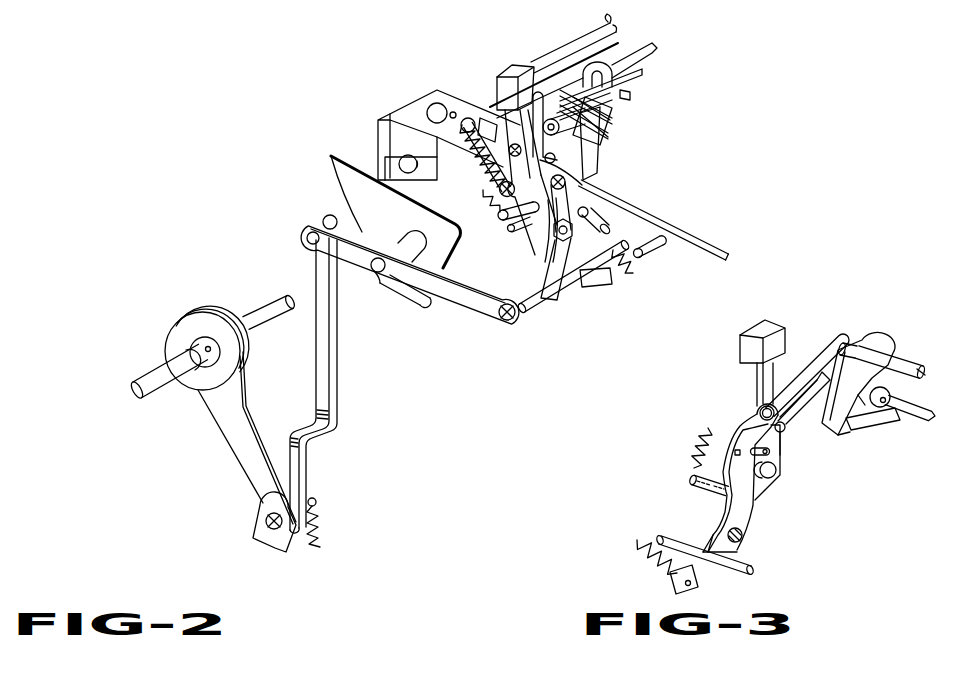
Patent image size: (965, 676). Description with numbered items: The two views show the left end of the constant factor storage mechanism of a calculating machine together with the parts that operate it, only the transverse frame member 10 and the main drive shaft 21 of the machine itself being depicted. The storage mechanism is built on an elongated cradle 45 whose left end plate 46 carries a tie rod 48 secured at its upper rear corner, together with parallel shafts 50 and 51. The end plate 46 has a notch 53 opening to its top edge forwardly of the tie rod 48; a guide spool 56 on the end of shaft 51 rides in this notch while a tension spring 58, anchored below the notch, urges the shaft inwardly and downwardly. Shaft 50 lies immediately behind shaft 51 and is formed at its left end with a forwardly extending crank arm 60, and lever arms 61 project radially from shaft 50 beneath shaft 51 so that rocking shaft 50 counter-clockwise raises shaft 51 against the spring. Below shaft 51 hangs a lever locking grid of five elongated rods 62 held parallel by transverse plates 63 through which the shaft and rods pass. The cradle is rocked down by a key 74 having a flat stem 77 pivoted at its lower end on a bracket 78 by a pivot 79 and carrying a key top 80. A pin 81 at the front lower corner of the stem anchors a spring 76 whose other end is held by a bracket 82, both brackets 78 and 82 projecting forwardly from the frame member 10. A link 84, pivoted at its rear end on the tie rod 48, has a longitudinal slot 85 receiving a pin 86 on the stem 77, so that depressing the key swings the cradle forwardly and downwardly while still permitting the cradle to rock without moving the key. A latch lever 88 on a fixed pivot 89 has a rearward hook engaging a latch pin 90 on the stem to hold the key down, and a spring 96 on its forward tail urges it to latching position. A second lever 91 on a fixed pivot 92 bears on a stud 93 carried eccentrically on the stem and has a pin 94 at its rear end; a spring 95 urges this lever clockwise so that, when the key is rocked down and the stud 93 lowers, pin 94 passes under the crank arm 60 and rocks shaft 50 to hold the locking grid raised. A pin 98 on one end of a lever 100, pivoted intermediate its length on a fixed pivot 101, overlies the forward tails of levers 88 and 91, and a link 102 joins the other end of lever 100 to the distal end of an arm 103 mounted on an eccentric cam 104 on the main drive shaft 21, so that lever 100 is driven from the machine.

In FIG. 2, the transverse frame member 10 is at (588, 42).
In FIG. 2, the main drive shaft 21 is at (175, 384).
In FIG. 2, the cradle 45 is at (541, 88).
In FIG. 2, the end plate 46 is at (597, 172).
In FIG. 3, the end plate 46 is at (895, 352).
In FIG. 2, the tie rod 48 is at (617, 26).
In FIG. 3, the tie rod 48 is at (912, 365).
In FIG. 2, the shaft 50 is at (655, 46).
In FIG. 3, the shaft 50 is at (930, 410).
In FIG. 2, the shaft 51 is at (645, 77).
In FIG. 2, the notch 53 is at (590, 157).
In FIG. 3, the notch 53 is at (838, 428).
In FIG. 2, the guide spool 56 is at (553, 118).
In FIG. 2, the tension spring 58 is at (605, 185).
In FIG. 2, the crank arm 60 is at (615, 165).
In FIG. 3, the crank arm 60 is at (815, 420).
In FIG. 2, the lever arms 61 is at (640, 72).
In FIG. 3, the lever arms 61 is at (882, 425).
In FIG. 2, the elongated rods 62 is at (612, 121).
In FIG. 2, the transverse plates 63 is at (608, 136).
In FIG. 2, the key 74 is at (500, 86).
In FIG. 3, the key 74 is at (756, 368).
In FIG. 2, the spring 76 is at (490, 215).
In FIG. 3, the spring 76 is at (695, 456).
In FIG. 2, the key stem 77 is at (537, 242).
In FIG. 3, the key stem 77 is at (757, 385).
In FIG. 2, the bracket 78 is at (414, 152).
In FIG. 2, the pivot 79 is at (495, 188).
In FIG. 2, the key top 80 is at (512, 68).
In FIG. 3, the key top 80 is at (740, 350).
In FIG. 2, the pin 81 is at (513, 228).
In FIG. 3, the pin 81 is at (700, 485).
In FIG. 2, the bracket 82 is at (409, 106).
In FIG. 2, the link 84 is at (470, 118).
In FIG. 3, the link 84 is at (847, 340).
In FIG. 3, the slot 85 is at (820, 365).
In FIG. 2, the pin 86 is at (499, 181).
In FIG. 3, the pin 86 is at (759, 412).
In FIG. 2, the latch lever 88 is at (560, 297).
In FIG. 2, the fixed pivot 89 is at (548, 262).
In FIG. 2, the latch pin 90 is at (500, 211).
In FIG. 2, the second lever 91 is at (640, 213).
In FIG. 3, the second lever 91 is at (722, 522).
In FIG. 2, the fixed pivot 92 is at (602, 236).
In FIG. 3, the fixed pivot 92 is at (743, 536).
In FIG. 3, the stud 93 is at (777, 471).
In FIG. 3, the pin 94 is at (770, 451).
In FIG. 3, the spring 95 is at (655, 550).
In FIG. 2, the spring 96 is at (625, 268).
In FIG. 2, the pin 98 is at (535, 318).
In FIG. 3, the pin 98 is at (752, 565).
In FIG. 2, the lever 100 is at (492, 320).
In FIG. 2, the fixed pivot 101 is at (380, 285).
In FIG. 2, the link 102 is at (315, 370).
In FIG. 2, the arm 103 is at (227, 432).
In FIG. 2, the eccentric cam 104 is at (165, 350).